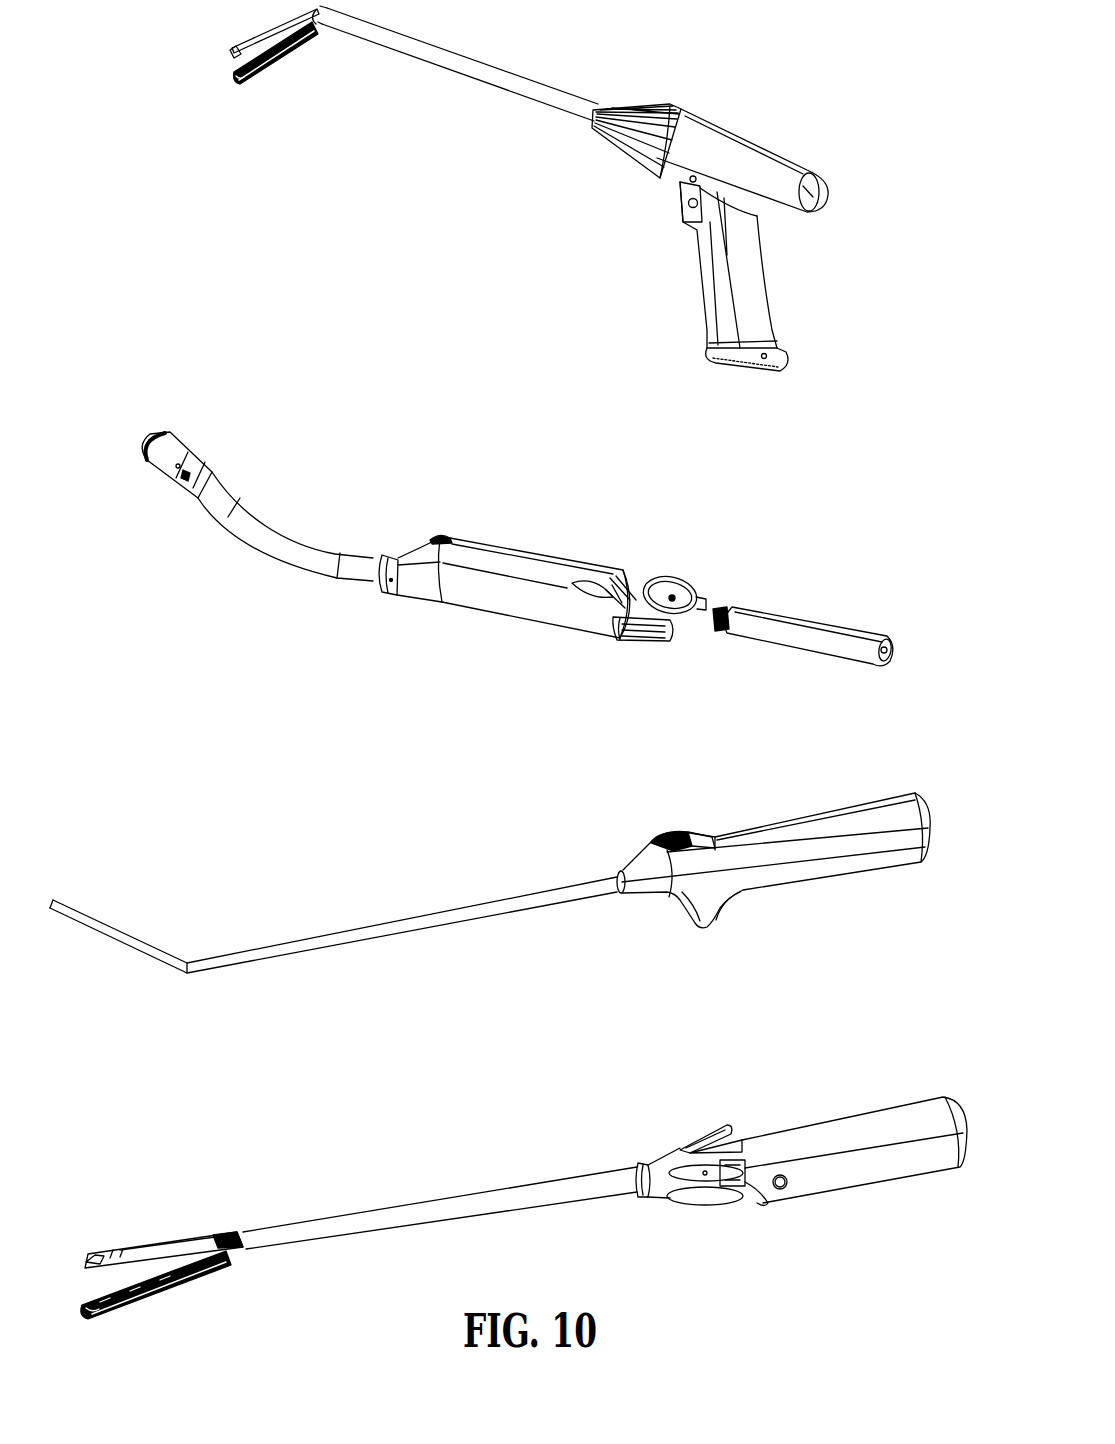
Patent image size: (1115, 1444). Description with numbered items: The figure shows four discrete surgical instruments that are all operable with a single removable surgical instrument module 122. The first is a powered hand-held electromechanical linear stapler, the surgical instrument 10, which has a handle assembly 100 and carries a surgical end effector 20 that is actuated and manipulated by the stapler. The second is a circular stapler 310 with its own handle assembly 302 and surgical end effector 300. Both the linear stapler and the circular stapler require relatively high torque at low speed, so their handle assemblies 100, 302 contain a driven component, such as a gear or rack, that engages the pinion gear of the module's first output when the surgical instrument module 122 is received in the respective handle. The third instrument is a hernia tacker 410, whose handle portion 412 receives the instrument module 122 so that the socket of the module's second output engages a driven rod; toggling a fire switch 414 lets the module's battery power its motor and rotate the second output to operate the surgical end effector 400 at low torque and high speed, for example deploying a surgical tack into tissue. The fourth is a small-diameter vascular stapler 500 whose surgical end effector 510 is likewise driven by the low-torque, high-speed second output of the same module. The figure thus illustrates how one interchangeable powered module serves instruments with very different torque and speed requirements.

The surgical instrument 10 is at (470, 61).
The surgical end effector 20 is at (298, 89).
The handle assembly 100 is at (710, 217).
The surgical instrument module 122 is at (803, 602).
The surgical end effector 300 is at (270, 479).
The handle assembly 302 is at (654, 548).
The circular stapler 310 is at (535, 546).
The surgical end effector 400 is at (333, 909).
The hernia tacker 410 is at (676, 890).
The handle portion 412 is at (787, 868).
The fire switch 414 is at (682, 915).
The small-diameter vascular stapler 500 is at (162, 1233).
The surgical end effector 510 is at (605, 1169).